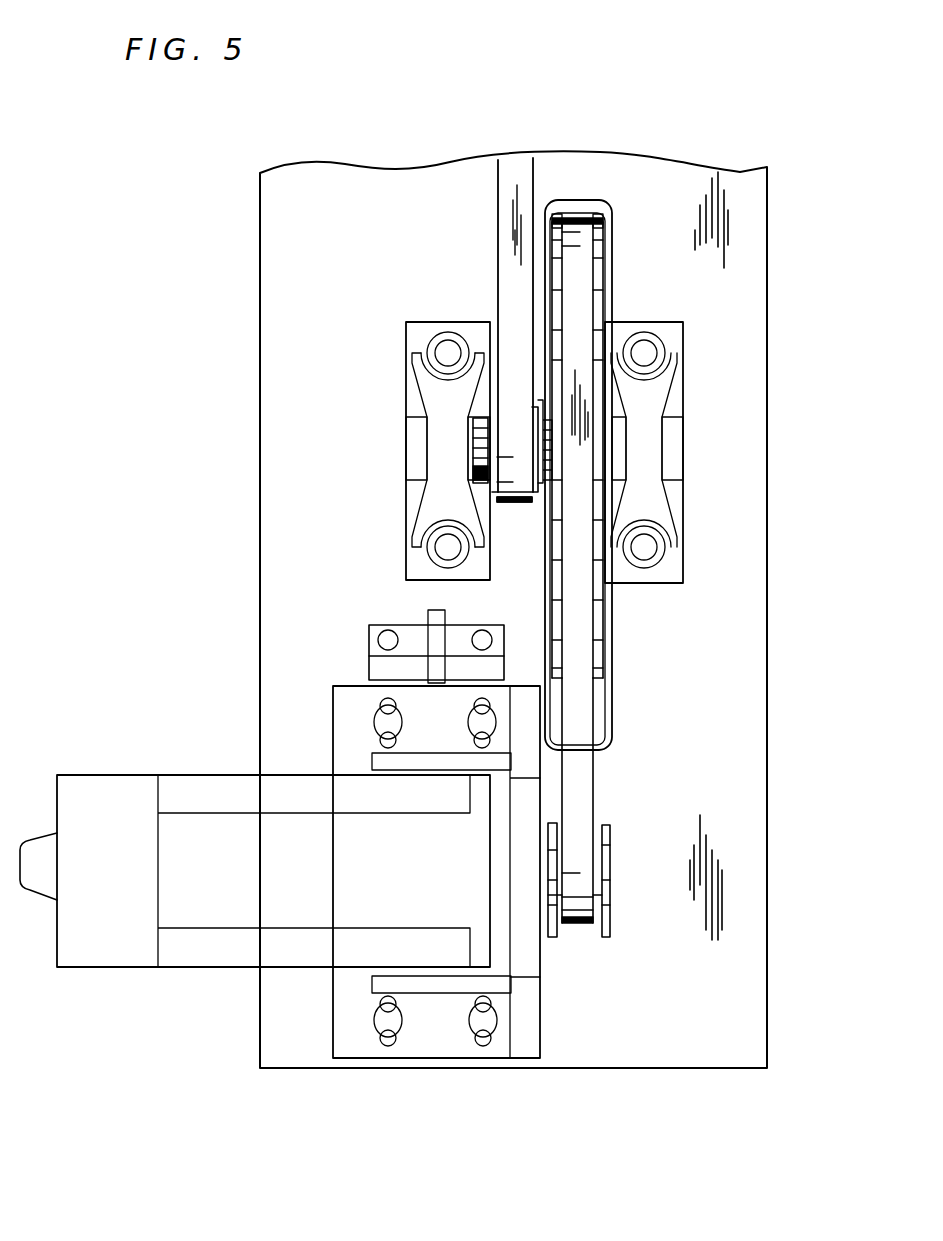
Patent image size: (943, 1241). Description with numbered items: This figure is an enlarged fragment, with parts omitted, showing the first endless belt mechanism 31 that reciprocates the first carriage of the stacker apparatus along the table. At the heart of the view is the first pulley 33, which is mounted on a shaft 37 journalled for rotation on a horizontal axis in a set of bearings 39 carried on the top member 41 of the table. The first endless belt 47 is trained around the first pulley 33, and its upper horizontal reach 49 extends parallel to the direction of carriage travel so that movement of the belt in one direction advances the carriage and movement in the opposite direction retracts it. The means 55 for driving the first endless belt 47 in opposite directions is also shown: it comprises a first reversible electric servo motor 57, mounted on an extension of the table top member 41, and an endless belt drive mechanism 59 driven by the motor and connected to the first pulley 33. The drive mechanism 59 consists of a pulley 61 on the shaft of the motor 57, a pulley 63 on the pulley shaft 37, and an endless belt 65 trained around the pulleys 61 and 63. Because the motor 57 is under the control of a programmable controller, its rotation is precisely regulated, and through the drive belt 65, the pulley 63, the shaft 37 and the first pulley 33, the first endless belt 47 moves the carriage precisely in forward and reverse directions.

The first endless belt mechanism 31 is at (512, 152).
The first pulley 33 is at (493, 415).
The shaft 37 is at (482, 448).
The bearings 39 is at (443, 498).
The top member 41 is at (738, 687).
The first endless belt 47 is at (496, 205).
The upper horizontal reach 49 is at (511, 266).
The means for driving the first endless belt 55 is at (605, 622).
The first reversible electric servo motor 57 is at (338, 886).
The endless belt drive mechanism 59 is at (613, 288).
The pulley 61 is at (603, 937).
The pulley 63 is at (603, 220).
The endless belt 65 is at (593, 790).